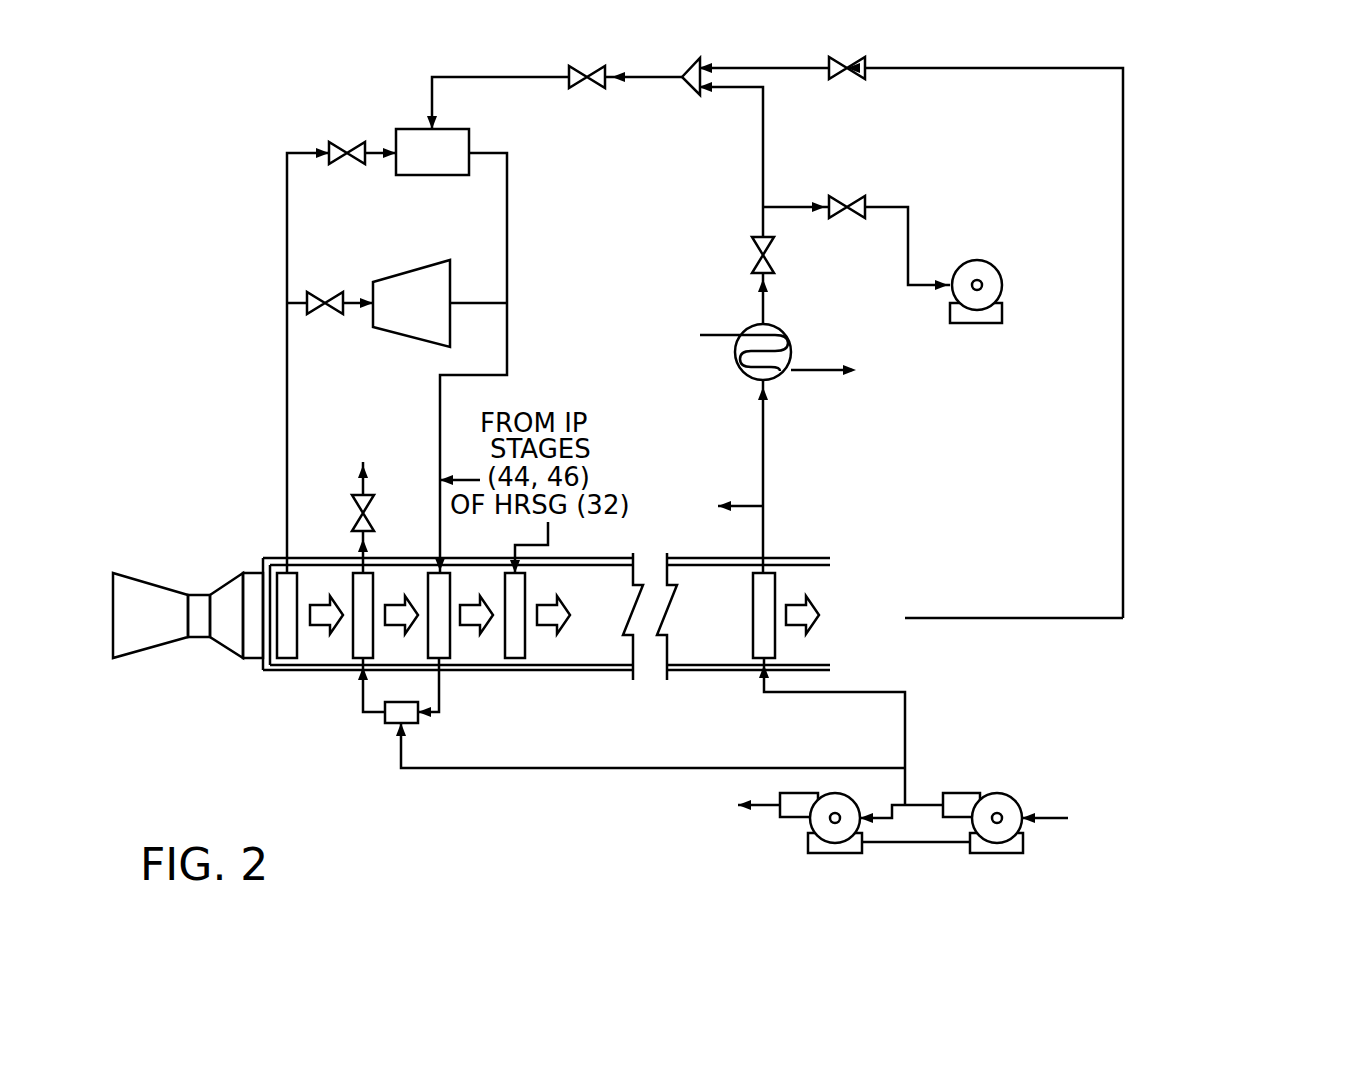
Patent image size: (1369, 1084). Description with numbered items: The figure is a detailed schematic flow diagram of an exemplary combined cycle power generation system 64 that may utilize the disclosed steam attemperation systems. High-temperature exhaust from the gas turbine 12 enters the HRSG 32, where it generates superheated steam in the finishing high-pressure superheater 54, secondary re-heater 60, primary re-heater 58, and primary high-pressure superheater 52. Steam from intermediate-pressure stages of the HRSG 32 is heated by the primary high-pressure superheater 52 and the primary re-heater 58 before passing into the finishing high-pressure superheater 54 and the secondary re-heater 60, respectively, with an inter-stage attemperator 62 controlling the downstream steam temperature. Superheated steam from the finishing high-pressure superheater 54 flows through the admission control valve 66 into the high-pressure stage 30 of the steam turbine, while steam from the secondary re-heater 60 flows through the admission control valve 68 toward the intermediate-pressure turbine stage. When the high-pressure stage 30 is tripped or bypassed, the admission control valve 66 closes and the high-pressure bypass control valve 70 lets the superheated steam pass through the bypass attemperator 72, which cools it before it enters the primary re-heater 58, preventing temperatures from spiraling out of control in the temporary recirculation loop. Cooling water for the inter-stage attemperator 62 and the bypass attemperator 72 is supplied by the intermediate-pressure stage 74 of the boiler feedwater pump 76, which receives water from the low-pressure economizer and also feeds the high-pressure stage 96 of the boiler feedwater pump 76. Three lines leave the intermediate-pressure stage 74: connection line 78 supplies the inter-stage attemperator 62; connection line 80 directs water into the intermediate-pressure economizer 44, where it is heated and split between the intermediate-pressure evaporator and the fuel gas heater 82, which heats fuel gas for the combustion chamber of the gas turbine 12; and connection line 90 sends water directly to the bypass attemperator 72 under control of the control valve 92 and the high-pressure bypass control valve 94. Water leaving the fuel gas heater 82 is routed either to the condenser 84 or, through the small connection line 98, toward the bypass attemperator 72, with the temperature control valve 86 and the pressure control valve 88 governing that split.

The gas turbine 12 is at (112, 612).
The high-pressure stage of the steam turbine 30 is at (410, 338).
The HRSG 32 is at (592, 668).
The intermediate-pressure economizer 44 is at (753, 615).
The primary high-pressure superheater 52 is at (518, 660).
The finishing high-pressure superheater 54 is at (287, 658).
The primary re-heater 58 is at (445, 660).
The secondary re-heater 60 is at (355, 660).
The inter-stage attemperator 62 is at (388, 725).
The combined cycle power generation system 64 is at (158, 98).
The admission control valve 66 is at (320, 295).
The admission control valve 68 is at (352, 508).
The high-pressure bypass control valve 70 is at (345, 148).
The bypass attemperator 72 is at (423, 176).
The intermediate-pressure stage of the boiler feedwater pump 74 is at (999, 837).
The boiler feedwater pump 76 is at (916, 875).
The connection line 78 is at (470, 770).
The connection line 80 is at (765, 540).
The fuel gas heater 82 is at (742, 370).
The condenser 84 is at (1000, 303).
The temperature control valve 86 is at (752, 250).
The pressure control valve 88 is at (840, 197).
The connection line 90 is at (1123, 342).
The control valve 92 is at (853, 80).
The high-pressure bypass control valve 94 is at (590, 90).
The high-pressure stage of the boiler feedwater pump 96 is at (830, 856).
The small connection line 98 is at (765, 125).